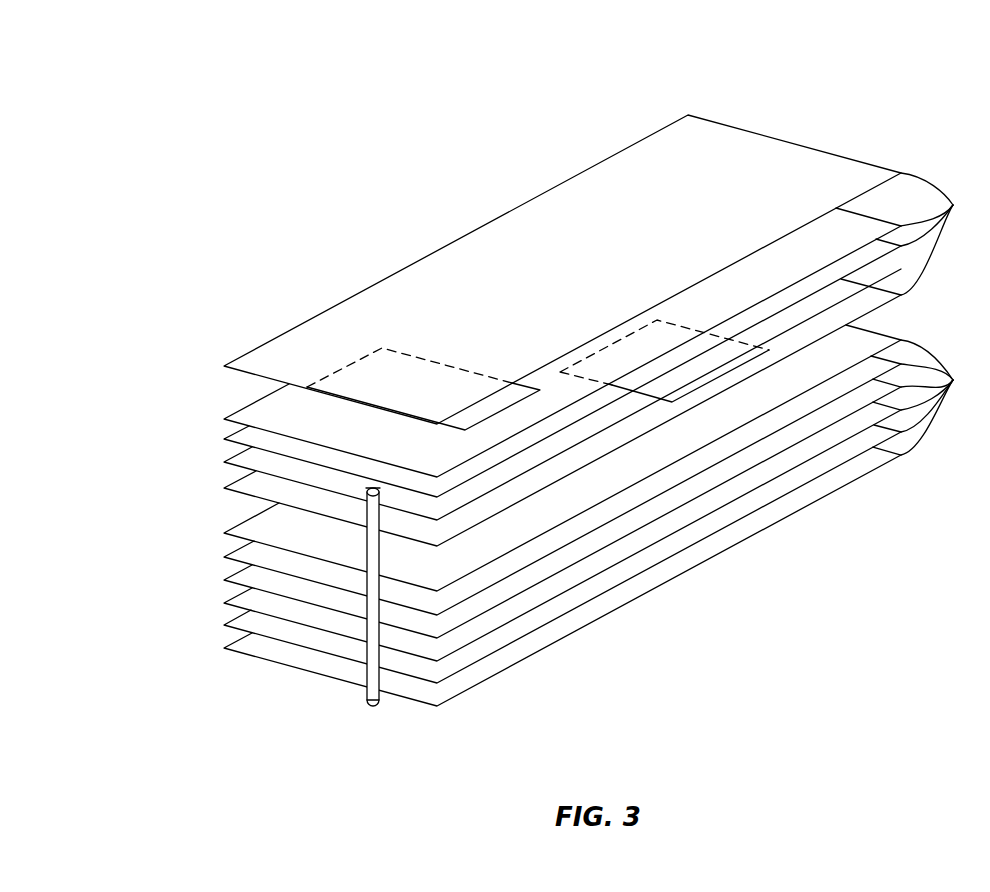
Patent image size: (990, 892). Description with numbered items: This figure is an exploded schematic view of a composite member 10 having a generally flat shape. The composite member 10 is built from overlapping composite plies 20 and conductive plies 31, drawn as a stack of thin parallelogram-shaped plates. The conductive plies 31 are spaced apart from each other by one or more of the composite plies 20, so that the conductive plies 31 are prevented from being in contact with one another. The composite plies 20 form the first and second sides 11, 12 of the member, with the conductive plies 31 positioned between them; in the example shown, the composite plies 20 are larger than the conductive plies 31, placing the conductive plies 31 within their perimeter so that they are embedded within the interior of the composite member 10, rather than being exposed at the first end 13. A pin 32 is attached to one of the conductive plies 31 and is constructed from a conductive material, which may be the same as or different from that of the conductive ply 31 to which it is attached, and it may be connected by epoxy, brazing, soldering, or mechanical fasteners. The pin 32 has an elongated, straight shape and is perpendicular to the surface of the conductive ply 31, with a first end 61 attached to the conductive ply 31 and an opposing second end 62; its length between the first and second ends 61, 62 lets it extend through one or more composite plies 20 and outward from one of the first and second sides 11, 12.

The composite member 10 is at (830, 76).
The first side 11 is at (545, 487).
The second side 12 is at (628, 165).
The first end 13 is at (266, 661).
The composite plies 20 is at (941, 314).
The conductive plies 31 is at (310, 398).
The pin 32 is at (380, 678).
The first end 61 is at (368, 494).
The second end 62 is at (372, 707).